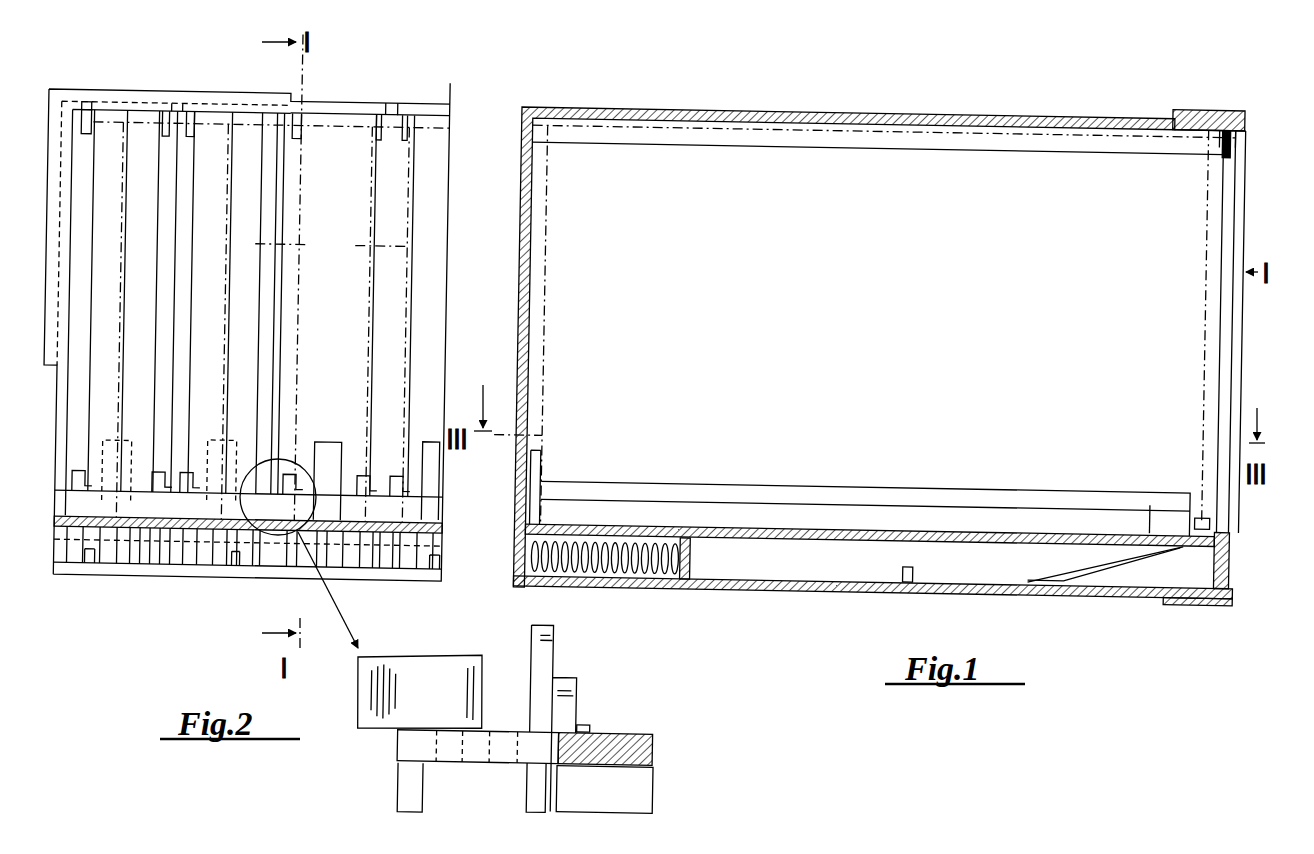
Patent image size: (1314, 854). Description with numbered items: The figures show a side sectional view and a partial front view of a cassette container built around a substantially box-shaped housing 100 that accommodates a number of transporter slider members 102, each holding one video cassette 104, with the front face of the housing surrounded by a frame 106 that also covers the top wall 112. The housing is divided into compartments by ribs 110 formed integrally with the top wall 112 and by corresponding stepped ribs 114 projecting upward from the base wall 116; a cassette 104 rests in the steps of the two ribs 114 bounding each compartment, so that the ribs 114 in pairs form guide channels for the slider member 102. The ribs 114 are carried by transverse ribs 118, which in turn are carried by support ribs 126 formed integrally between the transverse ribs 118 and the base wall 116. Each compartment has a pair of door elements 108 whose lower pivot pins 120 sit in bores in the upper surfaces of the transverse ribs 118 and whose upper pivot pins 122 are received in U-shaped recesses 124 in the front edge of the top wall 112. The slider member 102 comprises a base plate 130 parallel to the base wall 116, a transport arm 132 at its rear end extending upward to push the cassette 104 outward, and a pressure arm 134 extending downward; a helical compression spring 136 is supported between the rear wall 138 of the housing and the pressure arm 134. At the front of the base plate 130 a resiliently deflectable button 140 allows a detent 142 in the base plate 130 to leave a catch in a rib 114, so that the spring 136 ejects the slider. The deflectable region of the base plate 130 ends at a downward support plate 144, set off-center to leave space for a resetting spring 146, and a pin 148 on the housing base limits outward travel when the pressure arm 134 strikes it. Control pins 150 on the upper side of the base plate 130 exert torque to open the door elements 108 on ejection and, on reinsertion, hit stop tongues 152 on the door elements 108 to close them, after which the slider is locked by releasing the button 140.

In FIG. 2, the housing 100 is at (333, 100).
In FIG. 1, the housing 100 is at (868, 107).
In FIG. 2, the transporter slider member 102 is at (418, 535).
In FIG. 1, the transporter slider member 102 is at (914, 529).
In FIG. 2, the video cassette 104 is at (332, 243).
In FIG. 1, the video cassette 104 is at (657, 128).
In FIG. 2, the frame 106 is at (141, 99).
In FIG. 1, the frame 106 is at (1243, 126).
In FIG. 2, the door element 108 is at (147, 128).
In FIG. 1, the door element 108 is at (1228, 229).
In FIG. 2, the rib 110 is at (262, 140).
In FIG. 1, the rib 110 is at (798, 148).
In FIG. 2, the top wall 112 is at (428, 102).
In FIG. 1, the top wall 112 is at (753, 112).
In FIG. 2, the rib 114 is at (397, 478).
In FIG. 1, the rib 114 is at (710, 498).
In FIG. 2, the base wall 116 is at (398, 562).
In FIG. 1, the base wall 116 is at (935, 583).
In FIG. 2, the transverse rib 118 is at (397, 519).
In FIG. 2, the lower pivot pin 120 is at (448, 766).
In FIG. 2, the pivot pin 122 is at (87, 104).
In FIG. 1, the pivot pin 122 is at (1210, 130).
In FIG. 2, the U-shaped recess 124 is at (398, 103).
In FIG. 1, the U-shaped recess 124 is at (1224, 142).
In FIG. 2, the support rib 126 is at (273, 567).
In FIG. 1, the support rib 126 is at (1140, 569).
In FIG. 2, the base plate 130 is at (351, 518).
In FIG. 1, the base plate 130 is at (824, 529).
In FIG. 2, the transport arm 132 is at (125, 442).
In FIG. 1, the transport arm 132 is at (548, 456).
In FIG. 2, the pressure arm 134 is at (635, 791).
In FIG. 1, the pressure arm 134 is at (688, 567).
In FIG. 1, the helical compression spring 136 is at (628, 583).
In FIG. 1, the rear wall 138 is at (528, 400).
In FIG. 2, the button 140 is at (135, 564).
In FIG. 1, the button 140 is at (1222, 608).
In FIG. 2, the detent 142 is at (583, 723).
In FIG. 1, the detent 142 is at (1177, 533).
In FIG. 2, the support plate 144 is at (430, 562).
In FIG. 1, the support plate 144 is at (836, 566).
In FIG. 2, the resetting spring 146 is at (343, 562).
In FIG. 1, the resetting spring 146 is at (1087, 581).
In FIG. 2, the pin 148 is at (425, 562).
In FIG. 1, the pin 148 is at (903, 568).
In FIG. 1, the control pin 150 is at (1206, 518).
In FIG. 1, the stop tongue 152 is at (1202, 533).